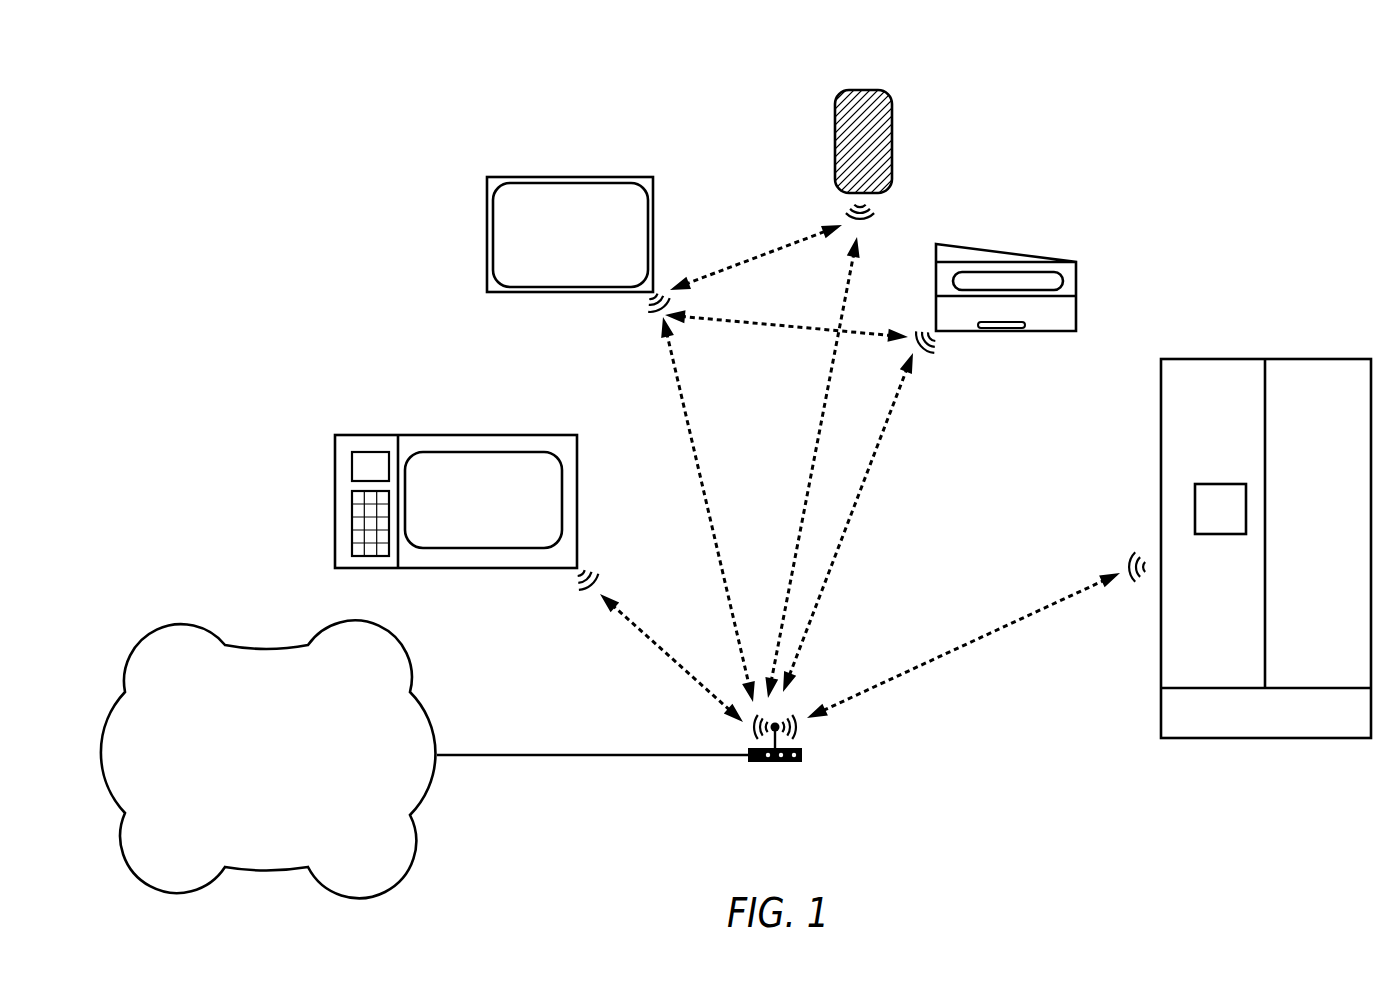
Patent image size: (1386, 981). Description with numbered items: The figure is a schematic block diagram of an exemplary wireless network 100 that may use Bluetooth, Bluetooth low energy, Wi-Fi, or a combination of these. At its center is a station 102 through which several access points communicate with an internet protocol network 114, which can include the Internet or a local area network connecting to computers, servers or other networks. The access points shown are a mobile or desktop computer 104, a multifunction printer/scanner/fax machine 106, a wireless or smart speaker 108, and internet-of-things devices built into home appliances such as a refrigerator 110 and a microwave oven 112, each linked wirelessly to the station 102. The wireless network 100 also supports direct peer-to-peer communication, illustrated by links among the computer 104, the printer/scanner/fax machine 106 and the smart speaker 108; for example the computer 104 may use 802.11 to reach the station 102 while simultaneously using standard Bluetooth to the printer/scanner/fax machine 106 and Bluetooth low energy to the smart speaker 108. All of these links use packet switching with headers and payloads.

The wireless network 100 is at (212, 81).
The station 102 is at (776, 762).
The mobile or desktop computer 104 is at (556, 244).
The multifunction printer/scanner/fax machine 106 is at (1025, 321).
The wireless or smart speaker 108 is at (862, 90).
The refrigerator 110 is at (1291, 437).
The microwave oven 112 is at (450, 519).
The internet protocol (IP) network 114 is at (246, 697).